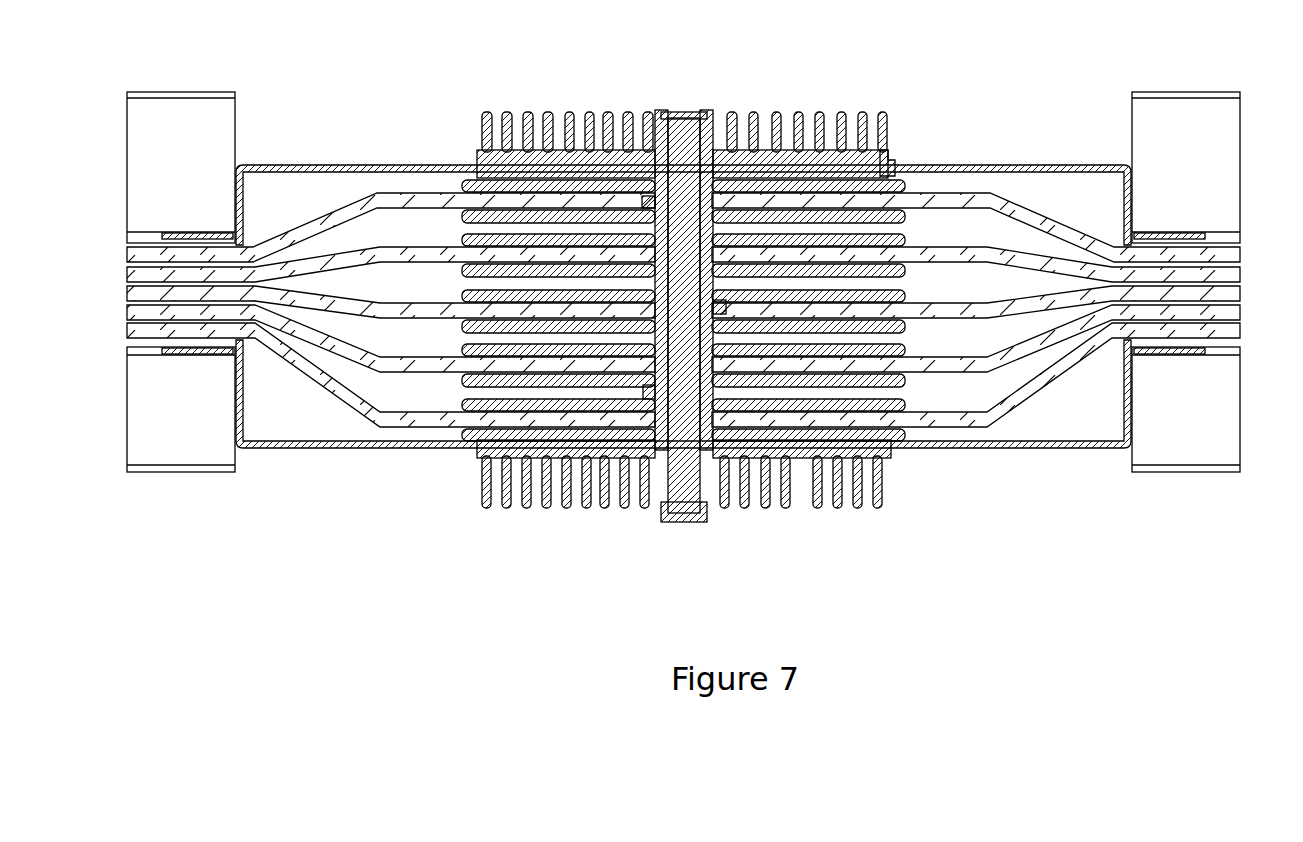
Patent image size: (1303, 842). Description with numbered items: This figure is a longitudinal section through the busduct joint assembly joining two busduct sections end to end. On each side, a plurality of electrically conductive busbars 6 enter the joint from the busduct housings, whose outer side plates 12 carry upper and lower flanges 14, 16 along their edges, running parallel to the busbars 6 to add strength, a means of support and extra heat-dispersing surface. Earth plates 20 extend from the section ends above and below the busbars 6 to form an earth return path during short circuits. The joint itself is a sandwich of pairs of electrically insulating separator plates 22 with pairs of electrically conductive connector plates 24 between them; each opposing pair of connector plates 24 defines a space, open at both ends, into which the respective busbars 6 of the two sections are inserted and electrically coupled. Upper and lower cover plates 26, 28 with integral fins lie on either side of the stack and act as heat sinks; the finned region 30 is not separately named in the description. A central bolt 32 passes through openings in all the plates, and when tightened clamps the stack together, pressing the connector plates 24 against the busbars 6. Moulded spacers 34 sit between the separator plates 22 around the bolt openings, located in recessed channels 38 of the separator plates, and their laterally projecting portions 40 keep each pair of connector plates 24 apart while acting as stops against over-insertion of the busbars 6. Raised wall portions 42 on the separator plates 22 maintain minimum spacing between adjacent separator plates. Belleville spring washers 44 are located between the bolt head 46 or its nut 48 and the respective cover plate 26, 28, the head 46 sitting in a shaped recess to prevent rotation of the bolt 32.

The busbars 6 is at (1220, 262).
The outer side plates 12 is at (1210, 147).
The upper flange 14 is at (1165, 92).
The lower flange 16 is at (1205, 472).
The earth plates 20 is at (998, 165).
The separator plates 22 is at (475, 200).
The connector plates 24 is at (505, 201).
The upper cover plate 26 is at (885, 163).
The lower cover plate 28 is at (887, 462).
The upper heat sink 30 is at (793, 140).
The bolt 32 is at (700, 508).
The moulded spacers 34 is at (640, 205).
The recessed channel 38 is at (735, 307).
The laterally projecting portions 40 is at (625, 205).
The raised wall portion 42 is at (657, 392).
The Belleville spring washers 44 is at (732, 160).
The head 46 is at (680, 118).
The nut 48 is at (665, 500).